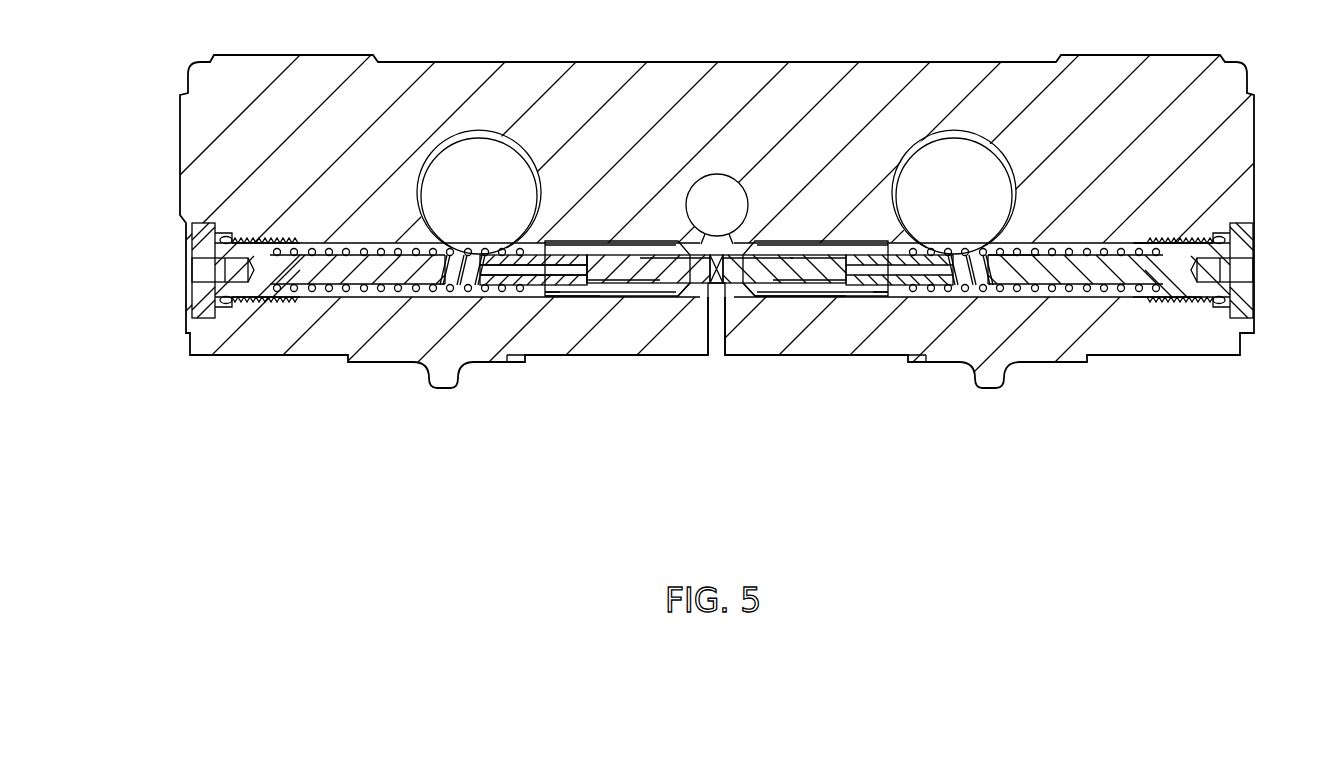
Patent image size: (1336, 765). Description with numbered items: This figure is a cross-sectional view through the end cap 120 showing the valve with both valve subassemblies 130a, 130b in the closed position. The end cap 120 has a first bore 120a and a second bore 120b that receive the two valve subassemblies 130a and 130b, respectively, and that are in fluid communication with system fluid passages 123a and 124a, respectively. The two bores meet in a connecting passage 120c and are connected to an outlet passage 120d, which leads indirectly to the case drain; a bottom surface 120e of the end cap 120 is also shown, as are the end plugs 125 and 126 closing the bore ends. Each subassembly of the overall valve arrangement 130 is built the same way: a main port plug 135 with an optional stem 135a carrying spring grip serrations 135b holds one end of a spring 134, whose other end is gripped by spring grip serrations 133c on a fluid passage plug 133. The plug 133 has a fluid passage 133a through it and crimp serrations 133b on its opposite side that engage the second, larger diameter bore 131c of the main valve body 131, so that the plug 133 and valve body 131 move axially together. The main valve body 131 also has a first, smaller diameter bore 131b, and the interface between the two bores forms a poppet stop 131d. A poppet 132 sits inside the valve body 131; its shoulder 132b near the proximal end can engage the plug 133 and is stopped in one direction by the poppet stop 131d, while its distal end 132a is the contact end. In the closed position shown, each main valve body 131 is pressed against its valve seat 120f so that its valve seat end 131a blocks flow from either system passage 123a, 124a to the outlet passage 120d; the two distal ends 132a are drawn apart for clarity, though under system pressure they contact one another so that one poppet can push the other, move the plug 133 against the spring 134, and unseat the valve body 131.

The end cap 120 is at (737, 99).
The first bore 120a is at (378, 245).
The second bore 120b is at (1075, 245).
The connecting passage 120c is at (688, 240).
The outlet passage 120d is at (713, 357).
The bottom surface 120e is at (610, 357).
The valve seat 120f is at (765, 243).
The system fluid passage 123a is at (522, 156).
The system fluid passage 124a is at (998, 156).
The first plug 125 is at (185, 222).
The second plug 126 is at (1250, 222).
The biasing assembly 130 is at (128, 283).
The valve subassembly 130a is at (168, 293).
The valve subassembly 130b is at (1265, 293).
The main valve body 131 is at (672, 250).
The valve seat end 131a is at (683, 296).
The first, smaller diameter bore 131b is at (752, 290).
The second, larger diameter bore 131c is at (597, 260).
The poppet stop 131d is at (800, 258).
The poppet 132 is at (838, 257).
The distal end 132a is at (719, 262).
The shoulder 132b is at (806, 292).
The fluid passage plug 133 is at (530, 250).
The fluid passage 133a is at (535, 293).
The crimp serrations 133b is at (575, 292).
The spring grip serrations 133c is at (500, 292).
The spring 134 is at (317, 292).
The main port plug 135 is at (253, 283).
The stem 135a is at (1060, 272).
The spring grip serrations 135b is at (1158, 243).